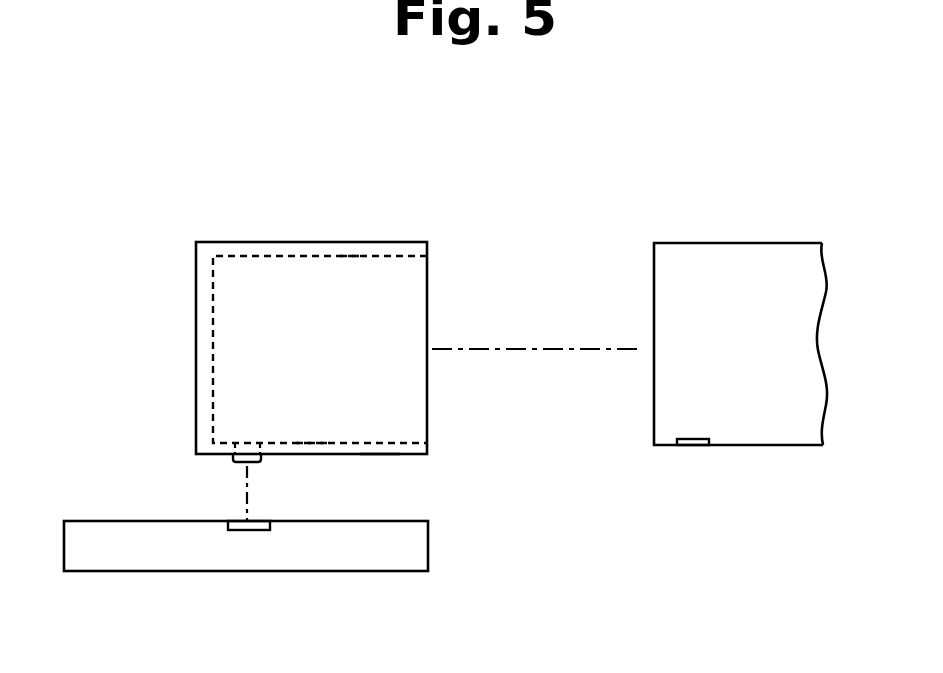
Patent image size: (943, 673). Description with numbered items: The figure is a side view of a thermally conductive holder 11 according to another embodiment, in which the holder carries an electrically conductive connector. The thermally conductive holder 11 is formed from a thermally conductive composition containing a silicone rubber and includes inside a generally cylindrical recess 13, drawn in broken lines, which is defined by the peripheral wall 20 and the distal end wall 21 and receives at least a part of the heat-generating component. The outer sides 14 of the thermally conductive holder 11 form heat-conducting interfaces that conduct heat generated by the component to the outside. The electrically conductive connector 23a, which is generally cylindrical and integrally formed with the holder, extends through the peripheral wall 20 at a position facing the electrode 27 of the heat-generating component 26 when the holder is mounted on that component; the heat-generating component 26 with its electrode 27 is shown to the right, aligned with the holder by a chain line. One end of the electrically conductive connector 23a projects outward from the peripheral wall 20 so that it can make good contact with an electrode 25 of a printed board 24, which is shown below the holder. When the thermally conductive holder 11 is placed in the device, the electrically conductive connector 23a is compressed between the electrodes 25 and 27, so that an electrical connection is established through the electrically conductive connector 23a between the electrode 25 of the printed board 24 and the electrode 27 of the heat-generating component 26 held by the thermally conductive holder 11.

The thermally conductive holder 11 is at (255, 242).
The recess 13 is at (344, 259).
The outer sides 14 is at (312, 432).
The peripheral wall 20 is at (380, 452).
The distal end wall 21 is at (206, 320).
The electrically conductive connector 23a is at (233, 460).
The printed board 24 is at (428, 545).
The electrode 25 is at (249, 530).
The heat-generating component 26 is at (782, 243).
The electrode 27 is at (700, 445).